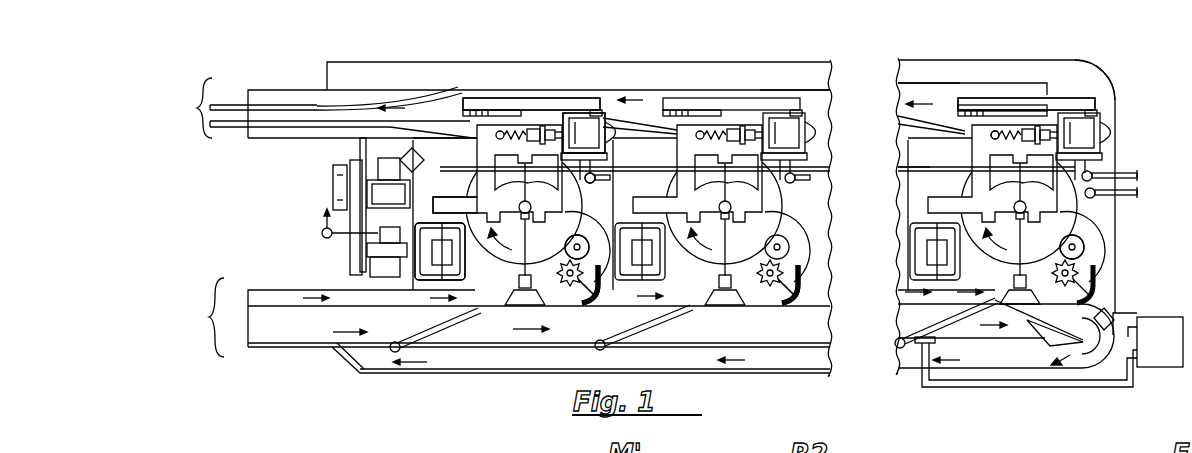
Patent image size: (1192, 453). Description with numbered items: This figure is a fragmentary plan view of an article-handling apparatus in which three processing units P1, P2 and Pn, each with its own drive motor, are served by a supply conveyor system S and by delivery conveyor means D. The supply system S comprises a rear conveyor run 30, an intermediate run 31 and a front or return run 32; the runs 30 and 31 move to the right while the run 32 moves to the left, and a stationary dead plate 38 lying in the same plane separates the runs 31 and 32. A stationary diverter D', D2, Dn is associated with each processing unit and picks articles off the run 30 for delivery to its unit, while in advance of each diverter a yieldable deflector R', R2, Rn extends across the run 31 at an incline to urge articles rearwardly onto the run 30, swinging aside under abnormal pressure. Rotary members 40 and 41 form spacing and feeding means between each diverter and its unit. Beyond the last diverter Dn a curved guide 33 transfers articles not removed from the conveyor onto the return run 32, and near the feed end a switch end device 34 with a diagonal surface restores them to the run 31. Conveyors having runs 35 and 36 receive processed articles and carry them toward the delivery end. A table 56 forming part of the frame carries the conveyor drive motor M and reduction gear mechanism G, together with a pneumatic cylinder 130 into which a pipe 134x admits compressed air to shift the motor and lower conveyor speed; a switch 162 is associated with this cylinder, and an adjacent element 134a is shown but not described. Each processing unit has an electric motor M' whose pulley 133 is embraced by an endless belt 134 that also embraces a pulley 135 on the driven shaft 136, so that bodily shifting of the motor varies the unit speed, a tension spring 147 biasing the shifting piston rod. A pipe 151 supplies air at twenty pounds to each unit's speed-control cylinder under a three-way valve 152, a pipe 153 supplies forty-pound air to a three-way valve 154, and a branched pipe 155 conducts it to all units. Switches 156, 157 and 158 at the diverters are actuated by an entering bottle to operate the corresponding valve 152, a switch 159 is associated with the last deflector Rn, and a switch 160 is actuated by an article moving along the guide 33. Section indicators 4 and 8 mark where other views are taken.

The rear conveyor run 30 is at (262, 290).
The intermediate conveyor run 31 is at (278, 346).
The return conveyor run 32 is at (462, 360).
The curved guide 33 is at (1085, 342).
The switch end device 34 is at (368, 375).
The delivery conveyor run 35 is at (955, 120).
The delivery conveyor run 36 is at (812, 92).
The dead plate 38 is at (335, 352).
The rotary member 40 is at (532, 286).
The rotary member 41 is at (571, 248).
The support or table 56 is at (362, 152).
The pneumatic cylinder 130 is at (367, 253).
The pulley 133 is at (1095, 88).
The endless belt 134 is at (533, 108).
The pivot 134a is at (323, 234).
The pipe 134x is at (330, 240).
The pulley 135 is at (993, 110).
The shaft 136 is at (980, 117).
The tension spring 147 is at (1000, 128).
The pipe 151 is at (1092, 182).
The three-way valve 152 is at (586, 182).
The pipe 153 is at (1094, 193).
The three-way valve 154 is at (1090, 241).
The pipe 155 is at (898, 163).
The switch 156 is at (616, 298).
The switch 157 is at (797, 294).
The switch 158 is at (1100, 275).
The switch 159 is at (921, 346).
The switch 160 is at (1137, 320).
The switch 162 is at (470, 182).
The section line 4 is at (972, 73).
The section line 8 is at (396, 146).
The delivery conveyor means D is at (190, 108).
The stationary diverter D' is at (581, 300).
The stationary diverter D2 is at (795, 301).
The stationary diverter Dn is at (1102, 300).
The reduction gear mechanism G is at (372, 268).
The drive motor M is at (354, 211).
The electric motor M' is at (859, 108).
The processing unit P1 is at (505, 200).
The processing unit P2 is at (705, 200).
The processing unit Pn is at (1000, 200).
The deflector R' is at (447, 357).
The deflector R2 is at (655, 325).
The deflector Rn is at (972, 303).
The supply conveyor means S is at (204, 317).